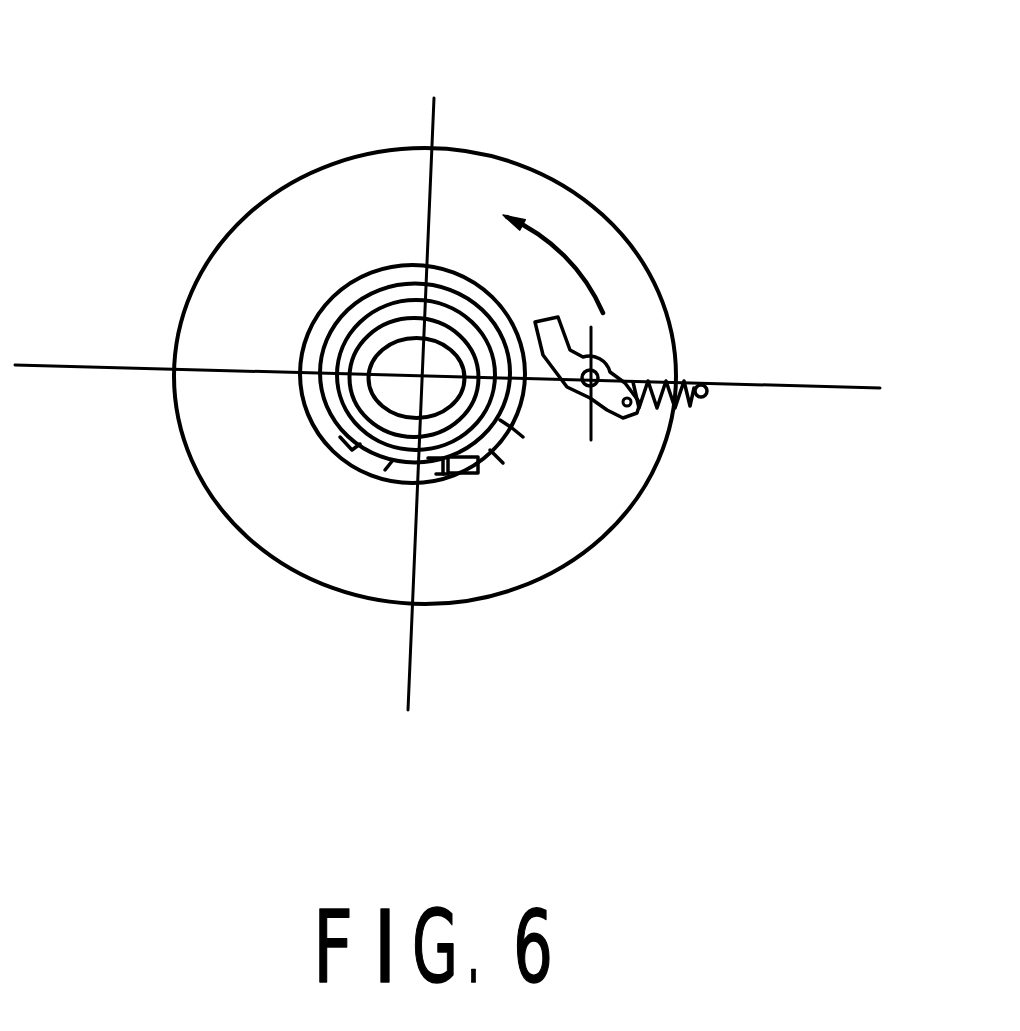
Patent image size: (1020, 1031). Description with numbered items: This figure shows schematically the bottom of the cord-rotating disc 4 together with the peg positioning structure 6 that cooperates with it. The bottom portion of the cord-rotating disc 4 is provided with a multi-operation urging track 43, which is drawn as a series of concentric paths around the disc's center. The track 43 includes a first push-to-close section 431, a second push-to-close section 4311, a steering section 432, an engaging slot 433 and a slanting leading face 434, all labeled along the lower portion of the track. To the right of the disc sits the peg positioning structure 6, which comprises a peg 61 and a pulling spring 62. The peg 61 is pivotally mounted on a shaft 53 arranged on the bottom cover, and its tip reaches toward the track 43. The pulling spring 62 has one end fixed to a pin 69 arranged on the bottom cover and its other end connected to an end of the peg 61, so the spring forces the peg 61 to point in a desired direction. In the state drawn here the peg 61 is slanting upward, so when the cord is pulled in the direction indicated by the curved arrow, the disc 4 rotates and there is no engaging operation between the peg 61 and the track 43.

The cord-rotating disc 4 is at (577, 187).
The multi-operation urging track 43 is at (360, 278).
The slanting leading face 434 is at (318, 318).
The first push-to-close section 431 is at (441, 478).
The second push-to-close section 4311 is at (480, 470).
The steering section 432 is at (496, 424).
The engaging slot 433 is at (436, 474).
The shaft 53 is at (575, 400).
The peg positioning structure 6 is at (701, 335).
The peg 61 is at (611, 368).
The pulling spring 62 is at (688, 378).
The pin 69 is at (705, 394).